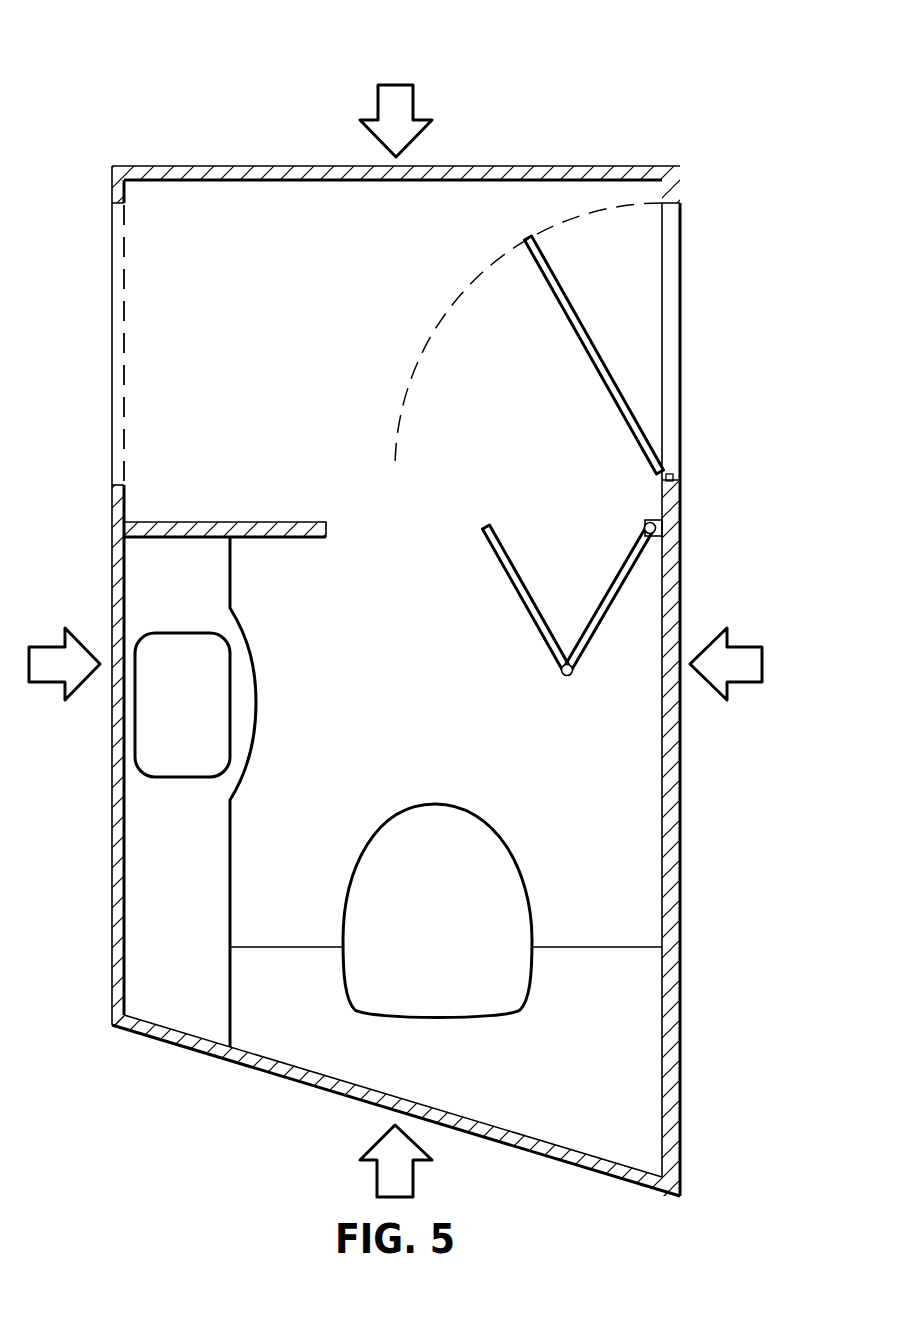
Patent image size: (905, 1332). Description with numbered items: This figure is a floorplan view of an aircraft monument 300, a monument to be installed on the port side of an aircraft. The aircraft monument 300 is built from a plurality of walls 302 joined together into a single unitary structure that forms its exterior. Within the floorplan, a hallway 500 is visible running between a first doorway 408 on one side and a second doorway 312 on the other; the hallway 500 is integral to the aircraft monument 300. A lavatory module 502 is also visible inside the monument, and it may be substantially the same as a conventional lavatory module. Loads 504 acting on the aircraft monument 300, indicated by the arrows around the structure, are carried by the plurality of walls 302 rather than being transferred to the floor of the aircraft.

The aircraft monument 300 is at (174, 69).
The plurality of walls 302 is at (690, 838).
The second doorway 312 is at (690, 330).
The first doorway 408 is at (125, 345).
The hallway 500 is at (335, 330).
The lavatory module 502 is at (396, 655).
The loads 504 is at (744, 647).